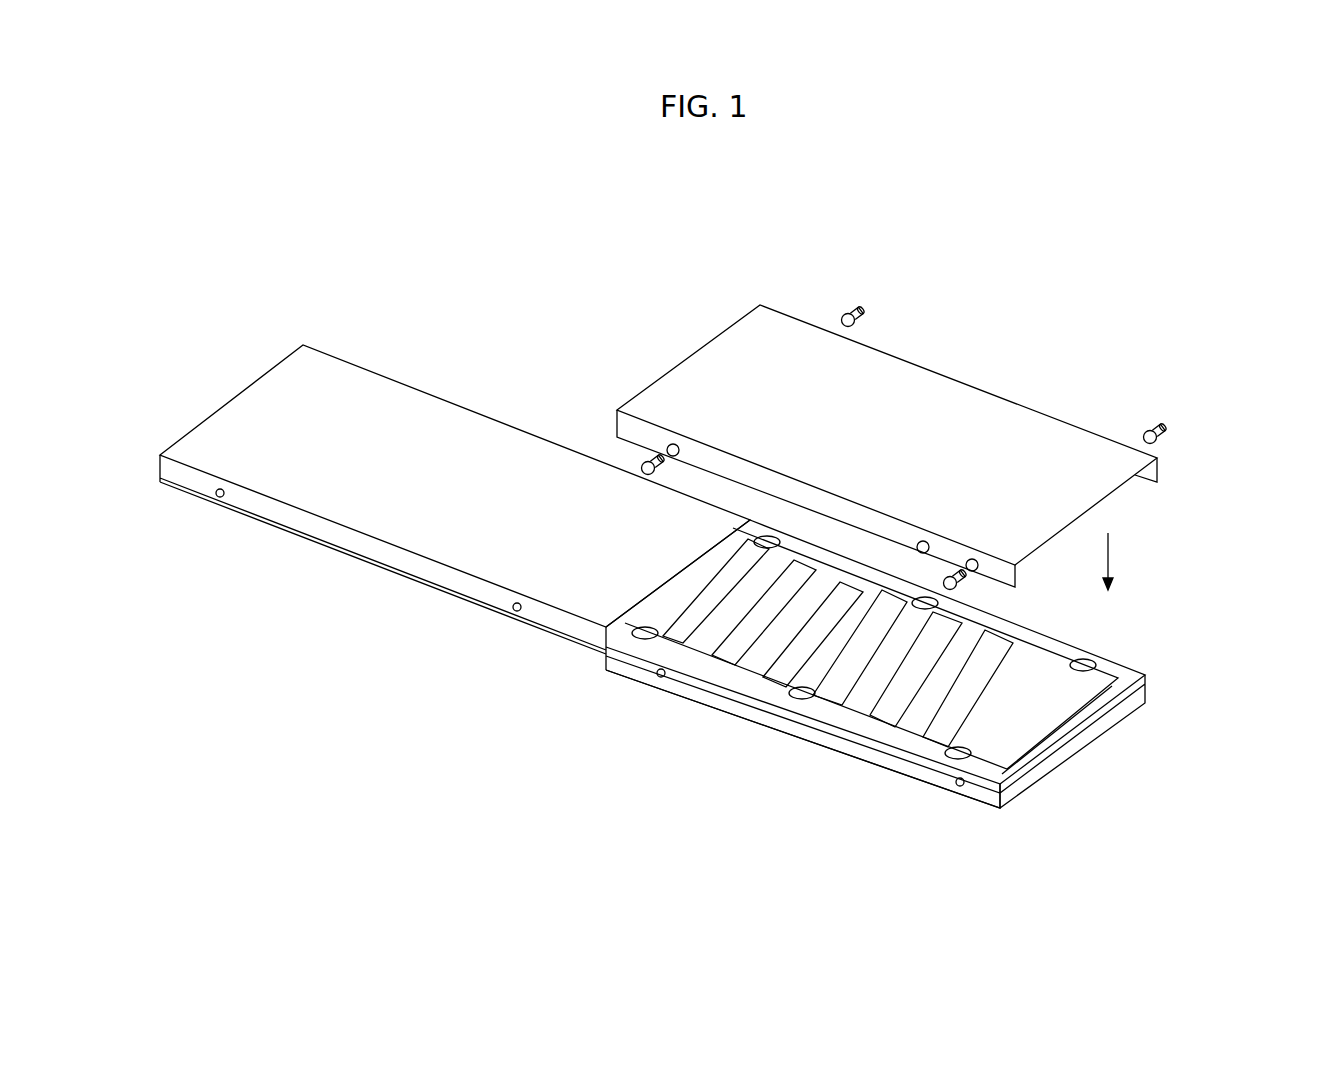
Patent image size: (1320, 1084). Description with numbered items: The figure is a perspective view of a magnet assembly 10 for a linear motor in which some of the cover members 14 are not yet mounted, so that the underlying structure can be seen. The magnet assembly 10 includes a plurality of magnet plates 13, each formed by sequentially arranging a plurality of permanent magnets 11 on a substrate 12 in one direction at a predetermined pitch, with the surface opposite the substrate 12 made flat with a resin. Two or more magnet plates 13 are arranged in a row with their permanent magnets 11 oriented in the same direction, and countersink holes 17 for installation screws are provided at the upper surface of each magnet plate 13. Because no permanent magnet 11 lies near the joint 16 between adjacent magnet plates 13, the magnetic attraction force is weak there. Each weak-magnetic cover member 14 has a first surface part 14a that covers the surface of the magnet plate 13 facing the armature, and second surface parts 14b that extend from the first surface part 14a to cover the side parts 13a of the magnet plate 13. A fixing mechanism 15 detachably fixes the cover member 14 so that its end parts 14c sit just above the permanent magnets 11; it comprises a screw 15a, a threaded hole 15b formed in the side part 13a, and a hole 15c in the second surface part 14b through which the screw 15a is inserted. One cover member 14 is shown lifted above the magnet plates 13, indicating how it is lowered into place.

The magnet assembly 10 is at (816, 244).
The permanent magnet 11 is at (1043, 727).
The substrate 12 is at (1032, 764).
The magnet plate 13 is at (1133, 743).
The side part 13a is at (790, 709).
The cover member 14 is at (398, 443).
The first surface part 14a is at (797, 373).
The second surface part 14b is at (735, 470).
The end part 14c is at (662, 388).
The fixing mechanism 15 is at (218, 498).
The screw 15a is at (638, 462).
The threaded hole 15b is at (661, 680).
The hole 15c is at (667, 444).
The joint 16 is at (648, 582).
The countersink hole 17 is at (1087, 660).